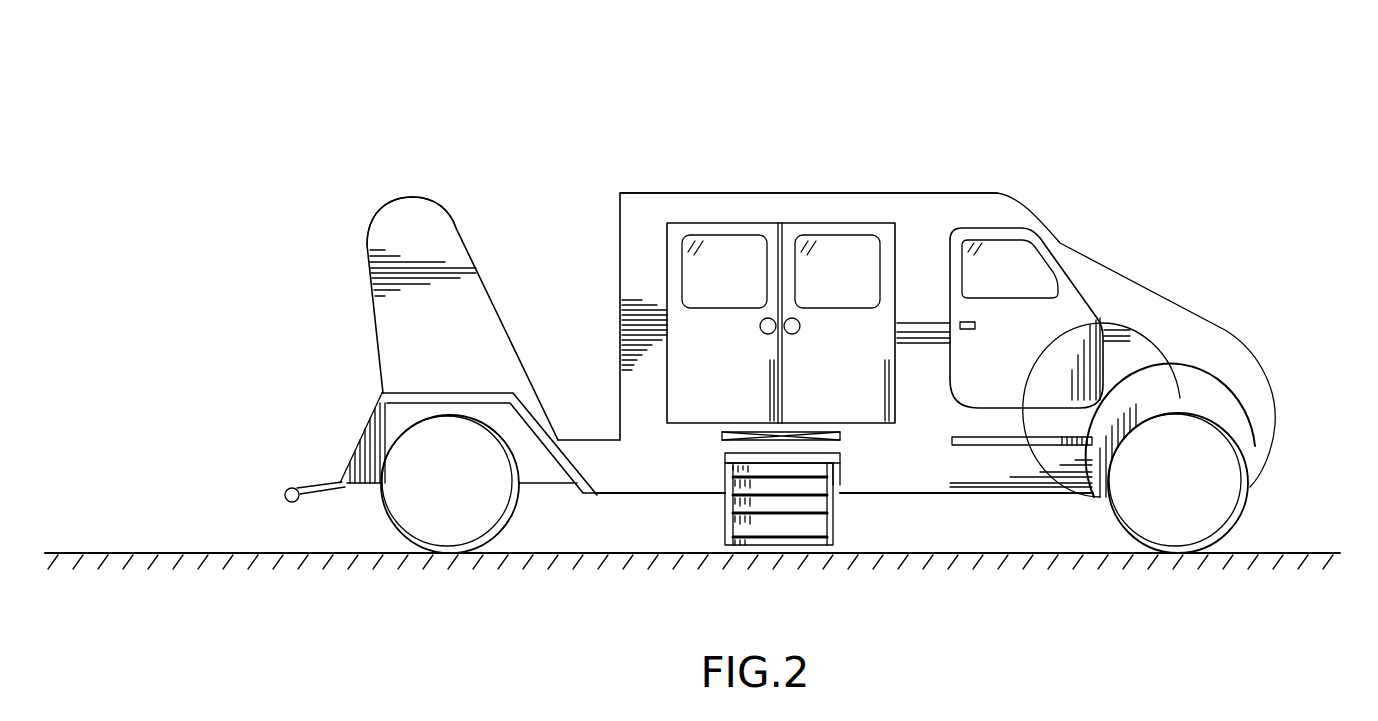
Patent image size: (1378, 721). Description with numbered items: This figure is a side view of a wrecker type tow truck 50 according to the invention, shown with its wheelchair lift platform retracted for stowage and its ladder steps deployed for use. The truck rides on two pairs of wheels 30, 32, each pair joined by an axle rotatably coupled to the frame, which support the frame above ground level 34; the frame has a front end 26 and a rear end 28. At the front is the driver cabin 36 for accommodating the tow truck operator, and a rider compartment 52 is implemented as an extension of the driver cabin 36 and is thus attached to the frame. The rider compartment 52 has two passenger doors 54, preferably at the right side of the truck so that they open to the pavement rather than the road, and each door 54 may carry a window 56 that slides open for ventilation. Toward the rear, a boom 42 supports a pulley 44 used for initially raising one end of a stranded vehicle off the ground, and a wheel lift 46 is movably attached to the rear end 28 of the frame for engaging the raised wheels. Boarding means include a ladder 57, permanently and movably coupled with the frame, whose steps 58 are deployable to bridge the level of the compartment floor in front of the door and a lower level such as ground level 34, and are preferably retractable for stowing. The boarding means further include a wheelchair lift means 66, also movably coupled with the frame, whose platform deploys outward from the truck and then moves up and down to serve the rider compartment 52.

The front end 26 is at (1279, 387).
The rear end 28 is at (349, 436).
The wheels 30 is at (392, 530).
The wheels 32 is at (1200, 527).
The ground level 34 is at (1307, 550).
The driver cabin 36 is at (1060, 250).
The boom 42 is at (394, 322).
The pulley 44 is at (386, 202).
The wheel lift 46 is at (285, 500).
The tow truck 50 is at (721, 112).
The rider compartment 52 is at (869, 195).
The passenger doors 54 is at (704, 379).
The window 56 is at (709, 285).
The ladder 57 is at (713, 517).
The steps 58 is at (820, 467).
The wheelchair lift means 66 is at (719, 437).